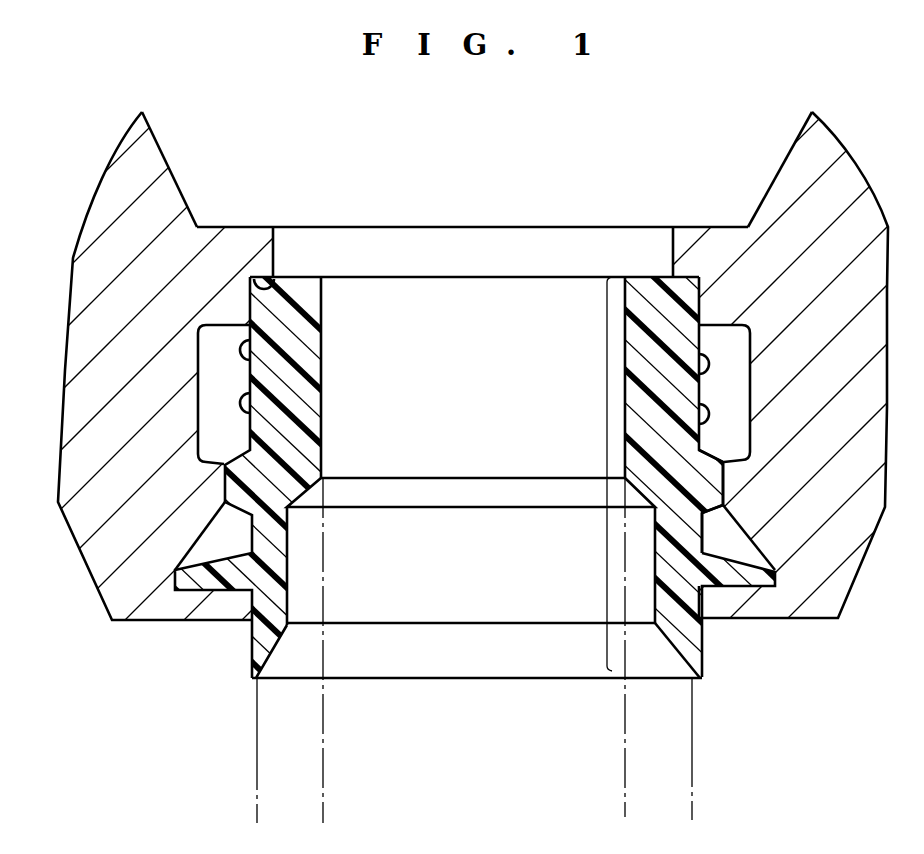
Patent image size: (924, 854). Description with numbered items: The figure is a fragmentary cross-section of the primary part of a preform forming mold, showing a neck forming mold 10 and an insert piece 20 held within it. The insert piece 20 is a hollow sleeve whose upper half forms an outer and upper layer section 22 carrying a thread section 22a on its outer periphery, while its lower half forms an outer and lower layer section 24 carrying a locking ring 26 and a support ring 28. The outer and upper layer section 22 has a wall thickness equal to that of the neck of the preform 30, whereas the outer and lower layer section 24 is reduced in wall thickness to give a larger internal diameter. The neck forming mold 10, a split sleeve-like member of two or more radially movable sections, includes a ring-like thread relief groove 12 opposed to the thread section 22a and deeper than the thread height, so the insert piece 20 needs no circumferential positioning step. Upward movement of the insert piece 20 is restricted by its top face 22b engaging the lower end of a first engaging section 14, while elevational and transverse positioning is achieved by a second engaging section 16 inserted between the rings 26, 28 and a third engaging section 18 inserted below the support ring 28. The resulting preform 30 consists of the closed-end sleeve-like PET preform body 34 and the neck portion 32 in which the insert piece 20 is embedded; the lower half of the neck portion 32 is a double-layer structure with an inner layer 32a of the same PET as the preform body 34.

The neck forming mold 10 is at (200, 208).
The thread relief groove 12 is at (722, 438).
The first engaging section 14 is at (705, 251).
The second engaging section 16 is at (712, 540).
The third engaging section 18 is at (720, 602).
The insert piece 20 is at (256, 639).
The outer and upper layer section 22 is at (491, 471).
The thread section 22a is at (713, 365).
The top face 22b is at (300, 264).
The outer and lower layer section 24 is at (333, 452).
The locking ring 26 is at (707, 489).
The support ring 28 is at (737, 578).
The preform 30 is at (706, 803).
The neck portion 32 is at (607, 460).
The inner layer 32a is at (637, 595).
The preform body 34 is at (638, 745).